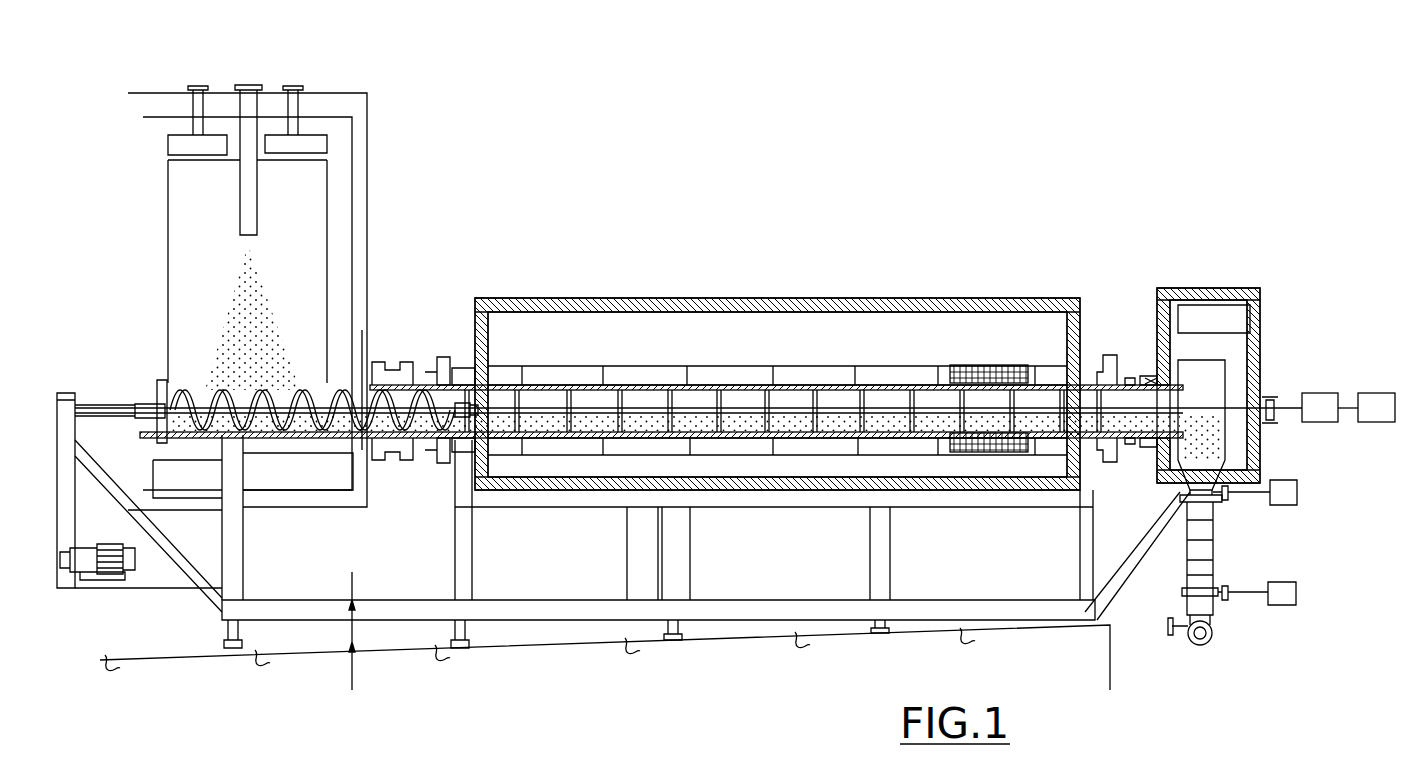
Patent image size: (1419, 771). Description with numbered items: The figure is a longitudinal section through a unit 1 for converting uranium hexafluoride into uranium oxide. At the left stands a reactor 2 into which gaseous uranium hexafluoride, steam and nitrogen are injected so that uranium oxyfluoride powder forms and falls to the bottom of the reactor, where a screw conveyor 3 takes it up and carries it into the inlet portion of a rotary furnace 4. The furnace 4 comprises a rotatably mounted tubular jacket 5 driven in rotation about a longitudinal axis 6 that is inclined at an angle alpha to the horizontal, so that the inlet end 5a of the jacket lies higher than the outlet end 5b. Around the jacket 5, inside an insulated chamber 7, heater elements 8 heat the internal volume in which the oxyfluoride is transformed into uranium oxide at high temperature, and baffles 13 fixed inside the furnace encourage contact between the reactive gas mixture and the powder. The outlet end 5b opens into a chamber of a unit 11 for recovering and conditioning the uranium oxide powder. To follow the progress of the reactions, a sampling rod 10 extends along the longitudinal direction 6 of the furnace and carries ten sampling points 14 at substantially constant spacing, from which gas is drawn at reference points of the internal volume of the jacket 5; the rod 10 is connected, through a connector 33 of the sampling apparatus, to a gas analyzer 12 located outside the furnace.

The unit for converting uranium hexafluoride into uranium oxide 1 is at (630, 208).
The reactor 2 is at (338, 68).
The screw conveyor 3 is at (285, 385).
The rotary furnace 4 is at (716, 318).
The tubular jacket 5 is at (848, 384).
The inlet end 5a is at (470, 378).
The outlet end 5b is at (1140, 378).
The longitudinal axis 6 is at (1098, 395).
The insulated chamber 7 is at (975, 300).
The heater elements 8 is at (822, 366).
The sampling rod 10 is at (1275, 378).
The unit for recovering and conditioning the uranium oxide powder 11 is at (1240, 278).
The gas analyzer 12 is at (1372, 424).
The baffles 13 is at (562, 398).
The sampling points 14 is at (640, 405).
The connector 33 is at (1316, 424).